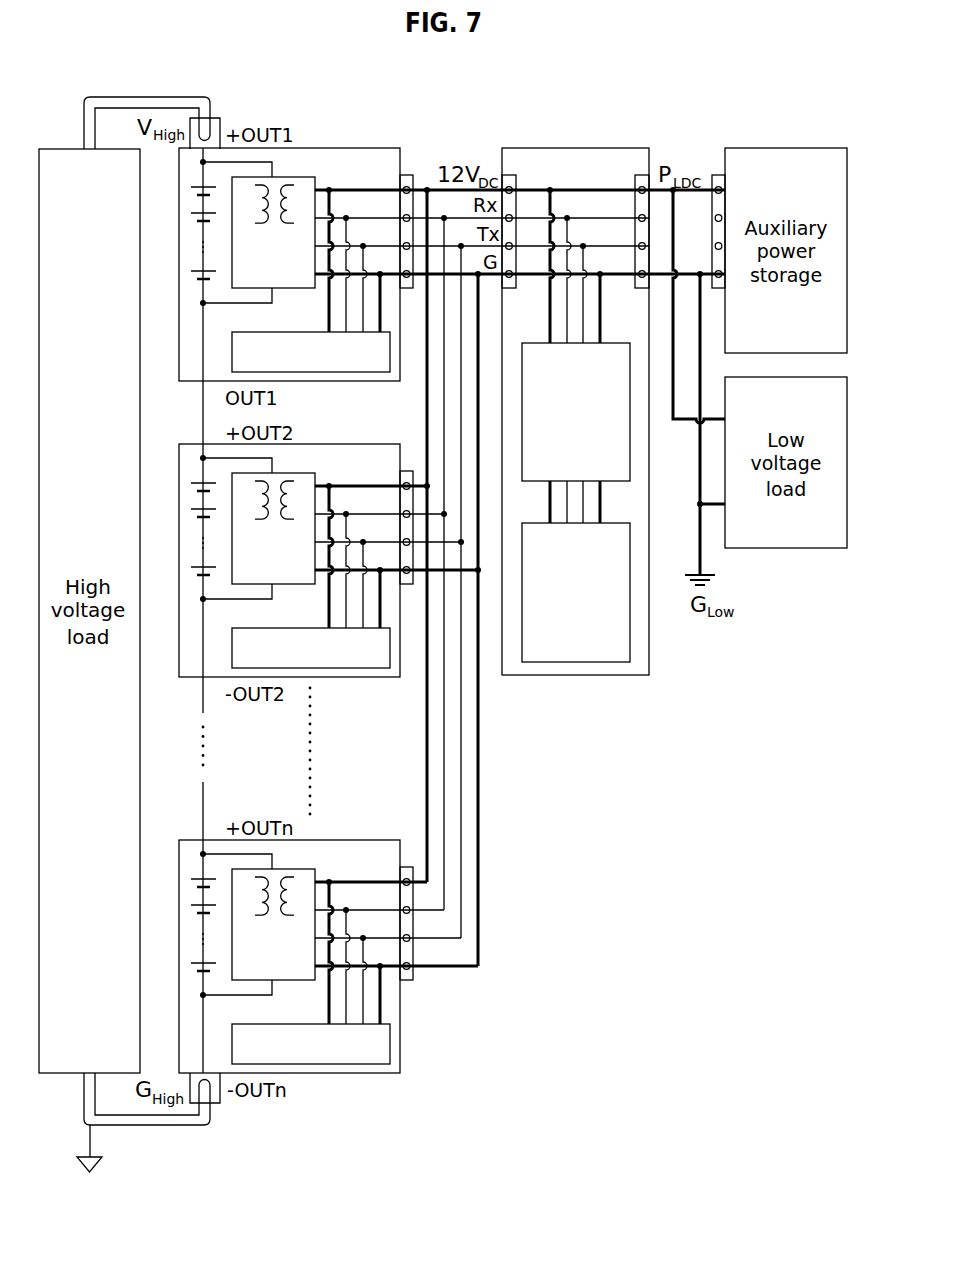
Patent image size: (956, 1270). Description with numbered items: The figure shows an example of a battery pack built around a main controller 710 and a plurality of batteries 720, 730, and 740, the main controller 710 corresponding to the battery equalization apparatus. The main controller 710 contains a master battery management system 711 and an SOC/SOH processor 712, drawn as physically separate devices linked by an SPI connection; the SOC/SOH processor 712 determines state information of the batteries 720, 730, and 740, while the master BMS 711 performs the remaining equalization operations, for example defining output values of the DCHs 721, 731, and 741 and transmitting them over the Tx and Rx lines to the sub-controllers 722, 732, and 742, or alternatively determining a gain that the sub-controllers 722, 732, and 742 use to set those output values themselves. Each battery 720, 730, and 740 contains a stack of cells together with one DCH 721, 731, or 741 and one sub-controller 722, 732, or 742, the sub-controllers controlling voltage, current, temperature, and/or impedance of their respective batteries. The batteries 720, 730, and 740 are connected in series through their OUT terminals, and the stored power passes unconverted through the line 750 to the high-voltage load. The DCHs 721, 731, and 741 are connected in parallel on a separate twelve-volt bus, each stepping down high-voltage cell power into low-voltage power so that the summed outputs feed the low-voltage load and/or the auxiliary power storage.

The main controller 710 is at (575, 396).
The master battery management system 711 is at (537, 342).
The SOC/SOH processor 712 is at (535, 522).
The battery 720 is at (328, 249).
The DCH 721 is at (317, 177).
The sub-controller 722 is at (272, 330).
The battery 730 is at (328, 545).
The DCH 731 is at (317, 473).
The sub-controller 732 is at (272, 626).
The battery 740 is at (328, 941).
The DCH 741 is at (317, 869).
The sub-controller 742 is at (272, 1022).
The line 750 is at (146, 96).